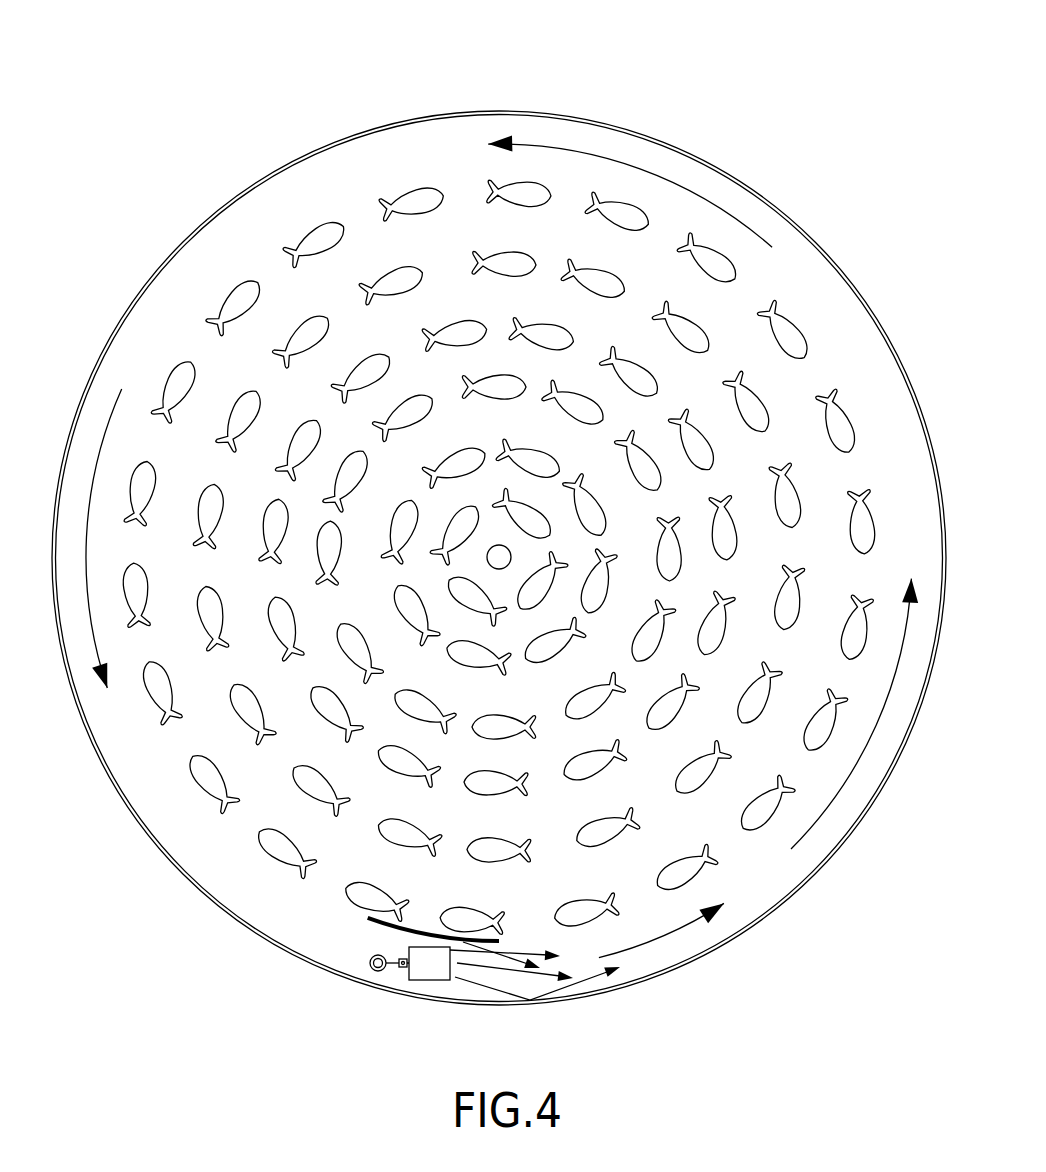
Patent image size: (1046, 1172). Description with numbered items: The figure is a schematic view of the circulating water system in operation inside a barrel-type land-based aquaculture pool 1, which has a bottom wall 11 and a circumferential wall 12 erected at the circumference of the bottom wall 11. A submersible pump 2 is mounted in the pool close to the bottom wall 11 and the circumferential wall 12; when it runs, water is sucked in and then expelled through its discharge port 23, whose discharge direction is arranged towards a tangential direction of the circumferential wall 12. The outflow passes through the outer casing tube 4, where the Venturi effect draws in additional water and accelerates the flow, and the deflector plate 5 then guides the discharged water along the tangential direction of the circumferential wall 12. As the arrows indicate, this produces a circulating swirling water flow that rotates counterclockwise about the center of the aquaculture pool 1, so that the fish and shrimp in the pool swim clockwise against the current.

The land-based aquaculture pool 1 is at (260, 157).
The bottom wall 11 is at (395, 155).
The circumferential wall 12 is at (650, 135).
The submersible pump 2 is at (371, 958).
The discharge port 23 is at (393, 968).
The outer casing tube 4 is at (430, 980).
The deflector plate 5 is at (463, 942).